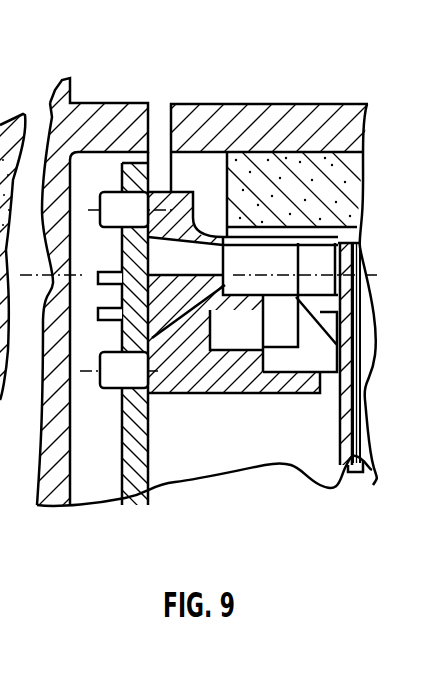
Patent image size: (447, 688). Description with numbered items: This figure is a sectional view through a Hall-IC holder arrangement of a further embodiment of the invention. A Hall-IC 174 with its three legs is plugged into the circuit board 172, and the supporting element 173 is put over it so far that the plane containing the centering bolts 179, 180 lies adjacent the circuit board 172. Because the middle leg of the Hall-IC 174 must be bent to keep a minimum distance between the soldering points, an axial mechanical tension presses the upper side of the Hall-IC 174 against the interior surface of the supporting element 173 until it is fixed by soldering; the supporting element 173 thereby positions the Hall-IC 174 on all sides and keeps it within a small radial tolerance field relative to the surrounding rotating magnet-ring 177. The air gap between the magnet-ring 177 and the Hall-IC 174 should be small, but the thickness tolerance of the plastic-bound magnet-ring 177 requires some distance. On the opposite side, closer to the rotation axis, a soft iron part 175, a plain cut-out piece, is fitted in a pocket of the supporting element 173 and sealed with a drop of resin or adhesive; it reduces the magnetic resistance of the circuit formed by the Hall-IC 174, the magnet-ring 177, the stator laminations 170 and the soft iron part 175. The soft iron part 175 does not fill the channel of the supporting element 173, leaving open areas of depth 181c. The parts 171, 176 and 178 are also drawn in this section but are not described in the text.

The stator laminations 170 is at (377, 460).
The sealing strip 171 is at (323, 480).
The circuit board 172 is at (137, 497).
The supporting element 173 is at (218, 372).
The Hall-IC 174 is at (248, 253).
The soft iron part 175 is at (290, 318).
The housing wall 176 is at (190, 118).
The magnet-ring 177 is at (343, 167).
The side wall 178 is at (77, 127).
The centering bolt 179 is at (110, 385).
The centering bolt 180 is at (113, 200).
The depth of open areas of channel 181c is at (240, 333).